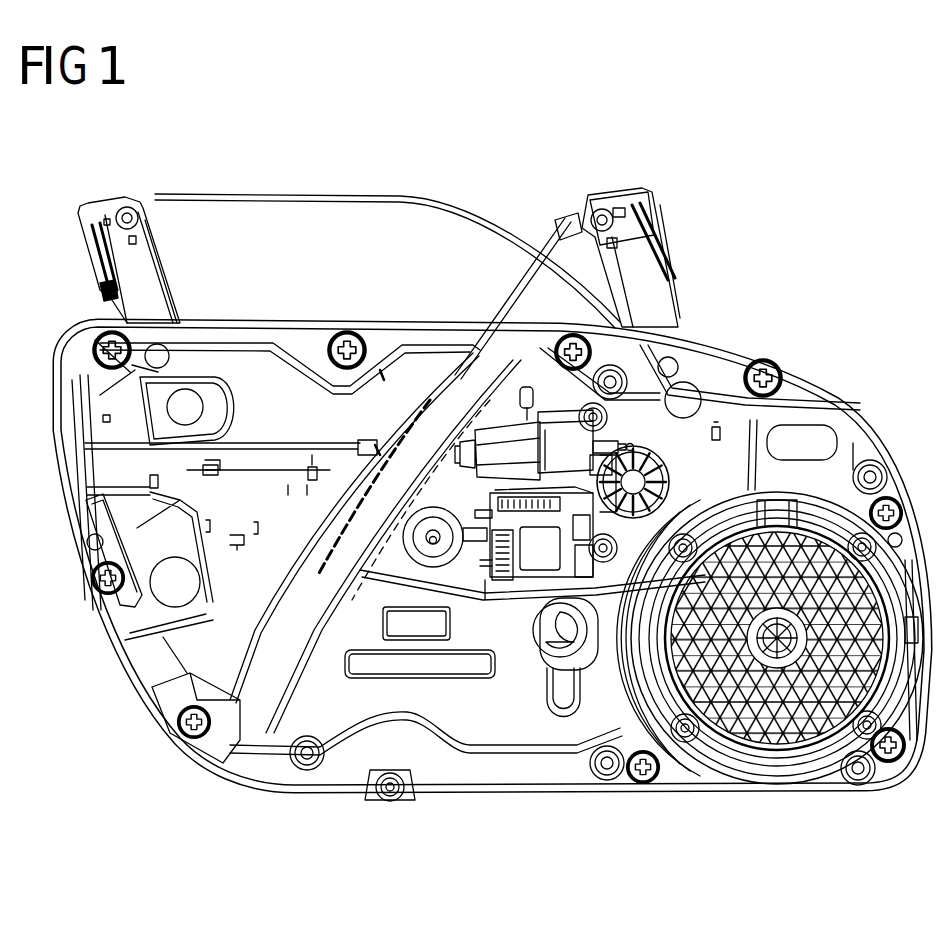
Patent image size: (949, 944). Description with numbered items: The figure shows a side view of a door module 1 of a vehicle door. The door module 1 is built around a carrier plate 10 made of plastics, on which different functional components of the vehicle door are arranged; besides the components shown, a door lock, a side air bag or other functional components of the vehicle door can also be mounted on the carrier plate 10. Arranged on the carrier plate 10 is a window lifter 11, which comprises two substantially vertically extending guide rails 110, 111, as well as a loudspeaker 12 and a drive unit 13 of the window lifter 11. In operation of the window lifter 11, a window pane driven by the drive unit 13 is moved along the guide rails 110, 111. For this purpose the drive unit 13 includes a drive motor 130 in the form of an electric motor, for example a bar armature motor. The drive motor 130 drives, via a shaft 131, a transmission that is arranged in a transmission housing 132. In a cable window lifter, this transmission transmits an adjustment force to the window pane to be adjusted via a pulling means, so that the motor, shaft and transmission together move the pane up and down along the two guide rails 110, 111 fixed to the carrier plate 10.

The door module 1 is at (115, 697).
The carrier plate 10 is at (263, 767).
The window lifter 11 is at (553, 205).
The guide rail 110 is at (110, 217).
The guide rail 111 is at (633, 200).
The loudspeaker 12 is at (732, 752).
The drive unit 13 is at (507, 600).
The drive motor 130 is at (567, 443).
The shaft 131 is at (600, 445).
The transmission housing 132 is at (645, 432).